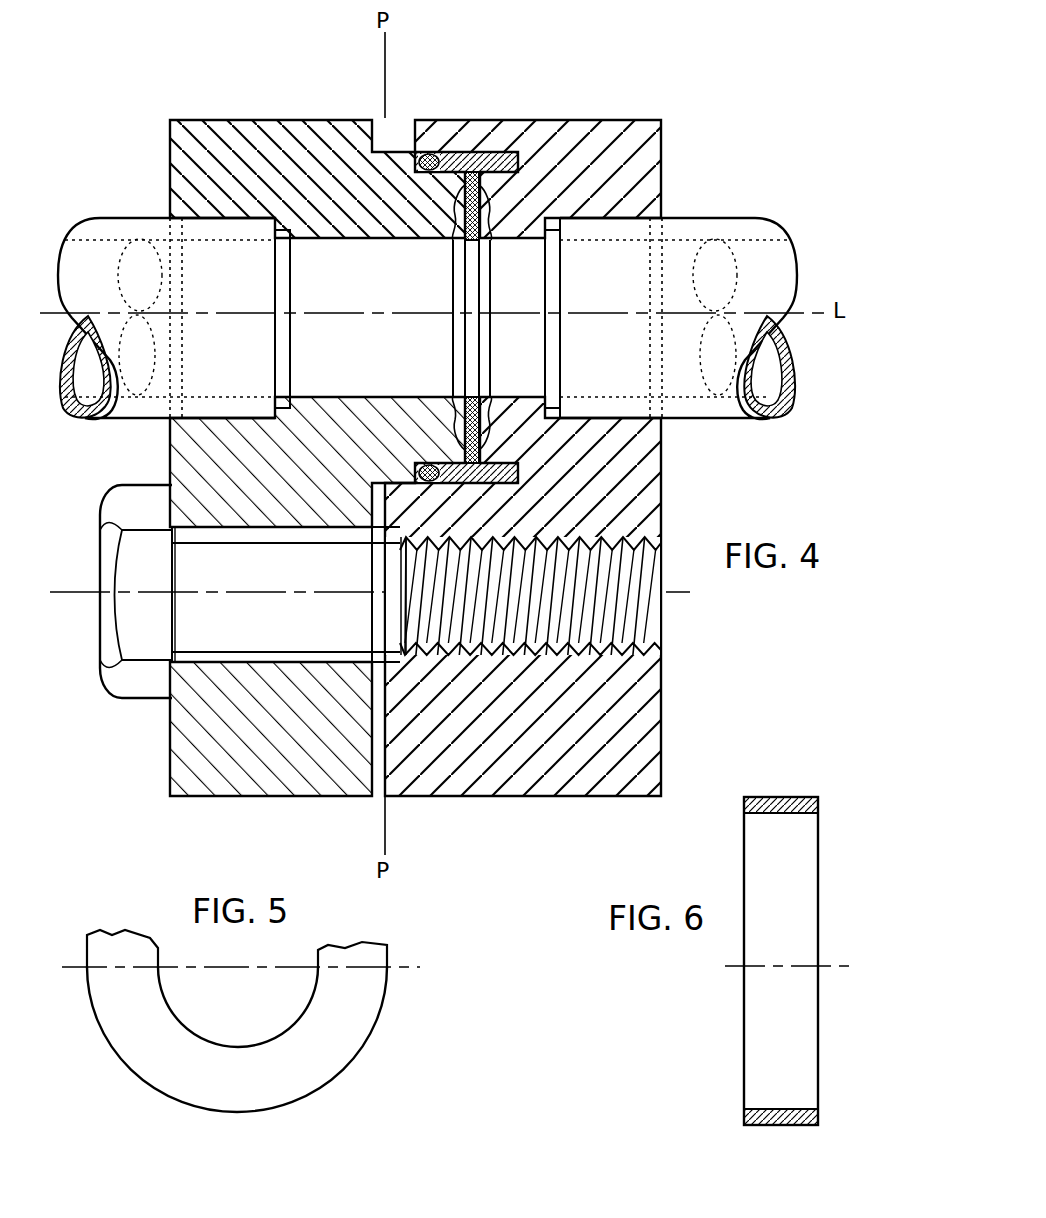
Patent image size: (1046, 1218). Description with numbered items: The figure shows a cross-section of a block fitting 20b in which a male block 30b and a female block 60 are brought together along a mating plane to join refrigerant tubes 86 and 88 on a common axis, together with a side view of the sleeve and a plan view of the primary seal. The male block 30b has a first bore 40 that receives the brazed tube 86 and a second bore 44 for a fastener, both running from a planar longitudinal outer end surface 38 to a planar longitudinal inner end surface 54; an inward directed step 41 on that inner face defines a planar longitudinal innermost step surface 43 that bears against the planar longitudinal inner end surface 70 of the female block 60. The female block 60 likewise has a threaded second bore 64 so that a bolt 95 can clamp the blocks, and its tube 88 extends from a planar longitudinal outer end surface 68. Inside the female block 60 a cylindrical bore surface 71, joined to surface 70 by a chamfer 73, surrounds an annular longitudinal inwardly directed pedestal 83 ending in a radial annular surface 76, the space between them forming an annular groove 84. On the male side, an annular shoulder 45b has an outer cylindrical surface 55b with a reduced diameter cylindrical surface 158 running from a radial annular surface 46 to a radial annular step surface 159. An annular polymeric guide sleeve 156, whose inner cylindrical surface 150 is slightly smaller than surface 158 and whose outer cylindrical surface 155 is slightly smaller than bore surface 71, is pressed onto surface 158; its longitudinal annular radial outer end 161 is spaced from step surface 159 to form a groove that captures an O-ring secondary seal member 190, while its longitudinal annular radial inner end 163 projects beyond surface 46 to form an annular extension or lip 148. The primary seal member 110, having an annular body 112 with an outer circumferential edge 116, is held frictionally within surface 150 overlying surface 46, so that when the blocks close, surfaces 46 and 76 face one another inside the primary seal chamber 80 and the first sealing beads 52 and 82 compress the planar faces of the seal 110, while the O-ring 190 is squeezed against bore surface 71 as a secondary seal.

In FIG. 4, the block fitting 20b is at (158, 78).
In FIG. 4, the male block 30b is at (170, 118).
In FIG. 4, the planar longitudinal outer end surface 38 is at (170, 478).
In FIG. 4, the first bore 40 is at (308, 255).
In FIG. 4, the inward directed step 41 is at (300, 797).
In FIG. 4, the planar longitudinal innermost step surface 43 is at (383, 760).
In FIG. 4, the second bore 44 is at (195, 622).
In FIG. 4, the annular shoulder 45b is at (412, 195).
In FIG. 4, the radial annular surface 46 is at (452, 428).
In FIG. 4, the first sealing bead 52 is at (440, 241).
In FIG. 4, the planar longitudinal inner end surface 54 is at (385, 125).
In FIG. 4, the outer cylindrical surface 55b is at (415, 484).
In FIG. 4, the female block 60 is at (662, 122).
In FIG. 4, the second bore 64 is at (625, 598).
In FIG. 4, the planar longitudinal outer end surface 68 is at (662, 488).
In FIG. 4, the planar longitudinal inner end surface 70 is at (380, 592).
In FIG. 4, the cylindrical bore surface 71 is at (510, 120).
In FIG. 4, the chamfer 73 is at (392, 120).
In FIG. 4, the radial annular surface 76 is at (484, 445).
In FIG. 4, the primary seal chamber 80 is at (492, 405).
In FIG. 4, the first sealing bead 82 is at (497, 242).
In FIG. 4, the annular longitudinal inwardly directed pedestal 83 is at (565, 215).
In FIG. 4, the annular groove 84 is at (570, 156).
In FIG. 4, the refrigerant tube 86 is at (72, 222).
In FIG. 4, the refrigerant tube 88 is at (790, 222).
In FIG. 4, the bolt 95 is at (100, 592).
In FIG. 4, the primary seal member 110 is at (462, 345).
In FIG. 5, the primary seal member 110 is at (380, 1025).
In FIG. 5, the annular body 112 is at (330, 1040).
In FIG. 5, the outer circumferential edge 116 is at (328, 1085).
In FIG. 4, the annular extension or lip 148 is at (520, 152).
In FIG. 4, the inner cylindrical surface 150 is at (497, 178).
In FIG. 6, the inner cylindrical surface 150 is at (785, 815).
In FIG. 6, the outer cylindrical surface 155 is at (762, 797).
In FIG. 4, the annular polymeric guide sleeve 156 is at (480, 152).
In FIG. 6, the annular polymeric guide sleeve 156 is at (743, 998).
In FIG. 4, the reduced diameter cylindrical surface 158 is at (418, 172).
In FIG. 4, the radial annular step surface 159 is at (418, 162).
In FIG. 6, the longitudinal annular radial outer end 161 is at (745, 806).
In FIG. 6, the longitudinal annular radial inner end 163 is at (820, 805).
In FIG. 4, the O-ring secondary seal member 190 is at (455, 150).